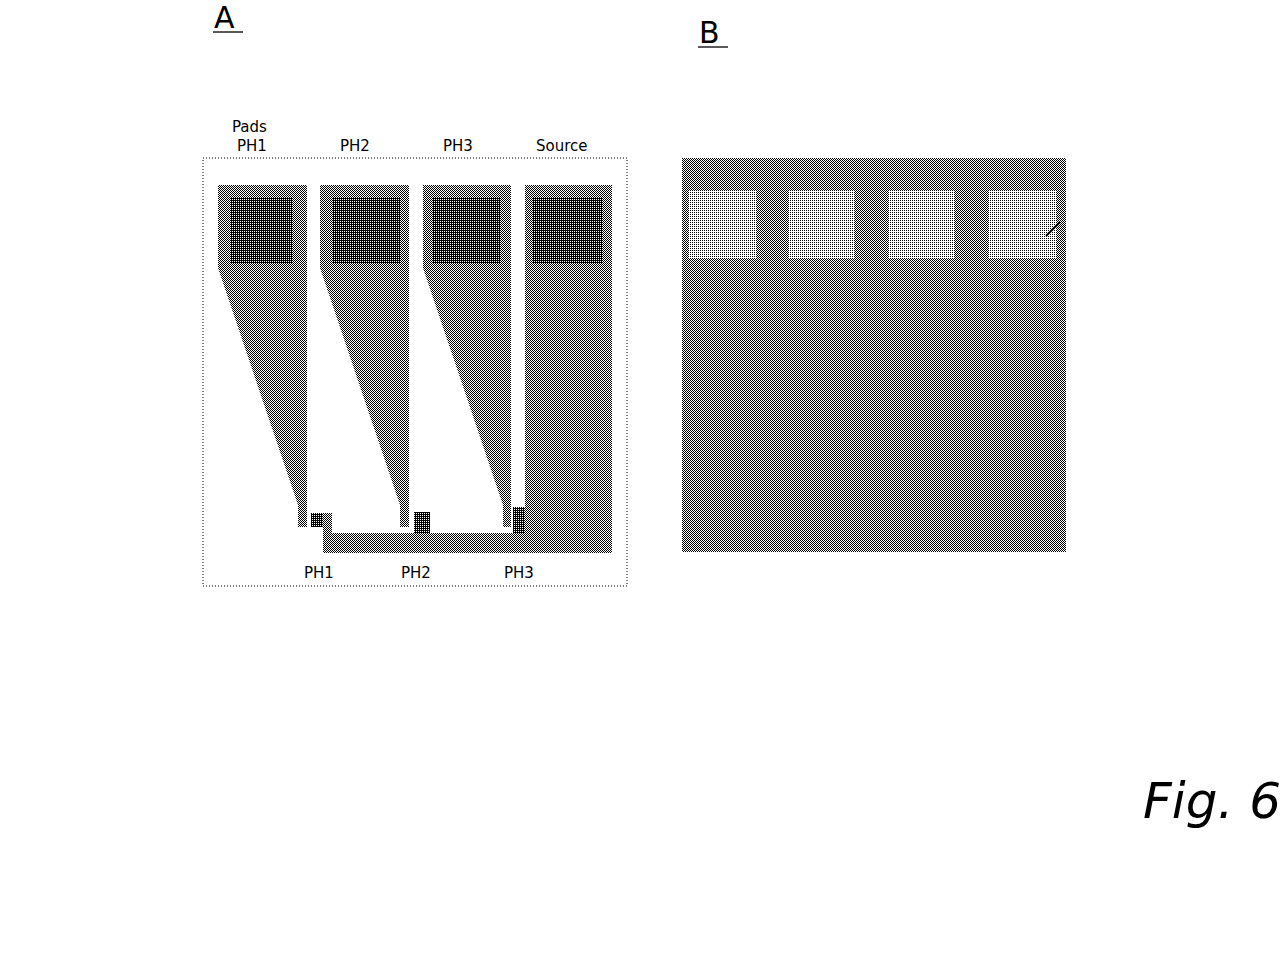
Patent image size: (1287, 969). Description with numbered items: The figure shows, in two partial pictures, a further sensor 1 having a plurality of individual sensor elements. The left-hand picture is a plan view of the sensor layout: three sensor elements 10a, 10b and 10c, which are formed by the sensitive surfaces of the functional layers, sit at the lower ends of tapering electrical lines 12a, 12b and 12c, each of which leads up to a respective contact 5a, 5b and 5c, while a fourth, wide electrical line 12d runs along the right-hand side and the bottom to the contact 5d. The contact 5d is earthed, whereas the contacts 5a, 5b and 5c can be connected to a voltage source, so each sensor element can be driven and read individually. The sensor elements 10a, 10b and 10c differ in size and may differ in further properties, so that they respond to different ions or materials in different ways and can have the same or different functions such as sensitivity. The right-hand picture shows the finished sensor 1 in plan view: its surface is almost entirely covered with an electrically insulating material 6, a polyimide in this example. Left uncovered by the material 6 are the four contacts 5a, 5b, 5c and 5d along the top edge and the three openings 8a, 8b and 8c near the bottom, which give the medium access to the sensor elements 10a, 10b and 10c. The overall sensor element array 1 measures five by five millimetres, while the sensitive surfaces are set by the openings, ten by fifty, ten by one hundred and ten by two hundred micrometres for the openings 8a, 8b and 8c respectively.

The sensor 1 is at (146, 599).
The contact 5a is at (262, 213).
The contact 5b is at (378, 212).
The contact 5c is at (478, 210).
The contact 5d is at (580, 210).
The electrically insulating material 6 is at (1040, 312).
The opening 8a is at (755, 591).
The opening 8b is at (865, 592).
The opening 8c is at (961, 593).
The sensor element 10a is at (312, 528).
The sensor element 10b is at (420, 530).
The sensor element 10c is at (517, 530).
The electrical line 12a is at (282, 413).
The electrical line 12b is at (388, 417).
The electrical line 12c is at (486, 421).
The electrical line 12d is at (578, 460).